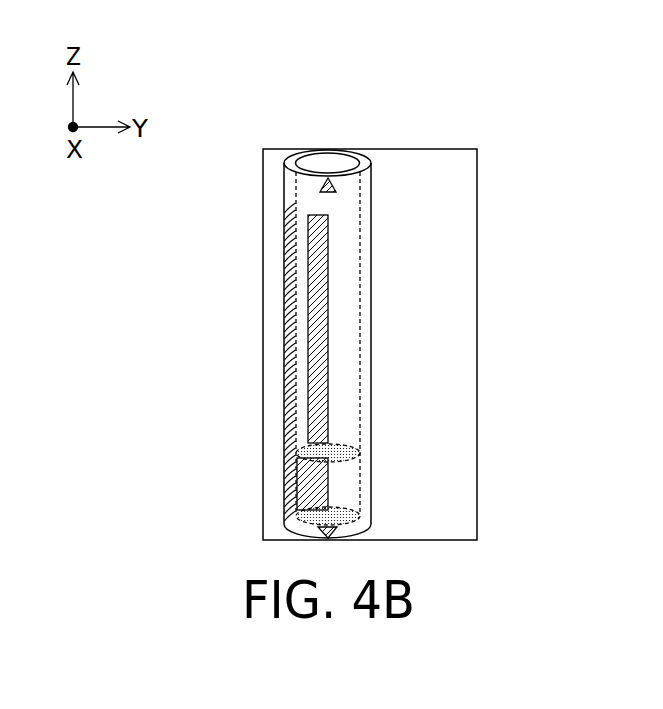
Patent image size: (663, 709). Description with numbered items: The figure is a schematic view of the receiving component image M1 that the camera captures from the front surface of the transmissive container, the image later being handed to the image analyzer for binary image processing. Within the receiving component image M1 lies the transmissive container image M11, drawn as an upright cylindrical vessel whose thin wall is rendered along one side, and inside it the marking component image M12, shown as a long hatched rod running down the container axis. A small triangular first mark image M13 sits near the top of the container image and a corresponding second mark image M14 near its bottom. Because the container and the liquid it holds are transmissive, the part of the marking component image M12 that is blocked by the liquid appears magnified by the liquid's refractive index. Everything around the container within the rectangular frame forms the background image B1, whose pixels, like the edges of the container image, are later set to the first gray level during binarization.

The receiving component image M1 is at (321, 315).
The transmissive container image M11 is at (284, 200).
The marking component image M12 is at (328, 340).
The first mark image M13 is at (336, 185).
The second mark image M14 is at (333, 529).
The background image B1 is at (275, 413).